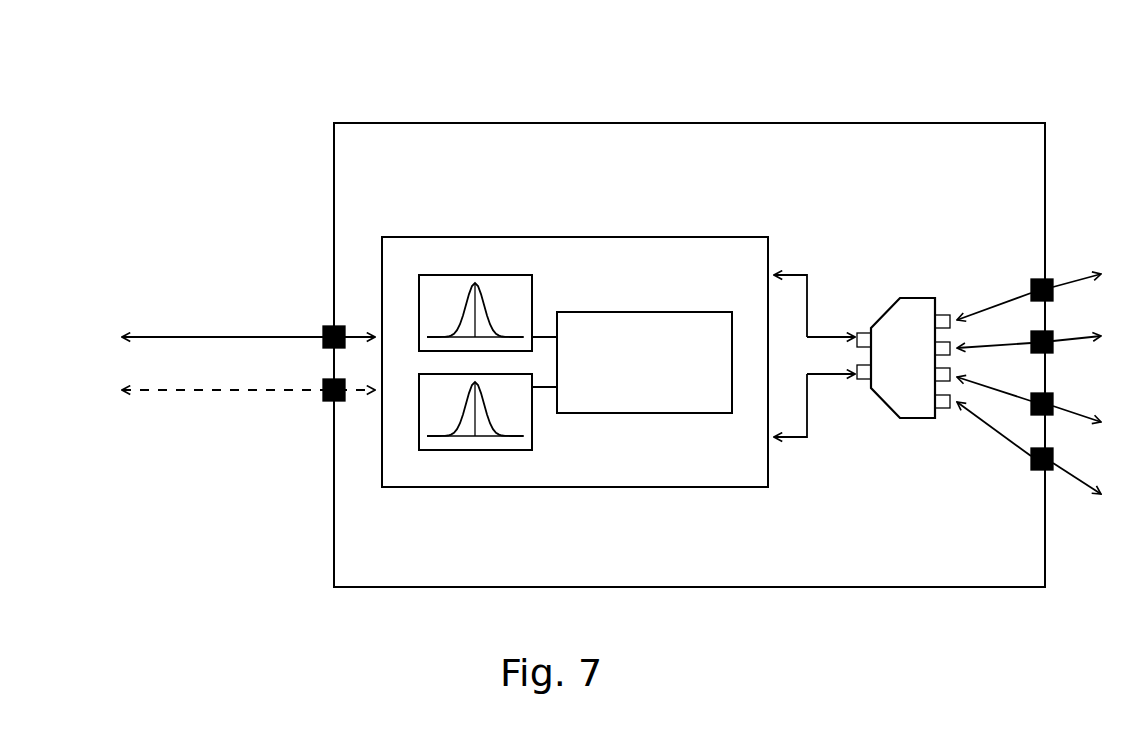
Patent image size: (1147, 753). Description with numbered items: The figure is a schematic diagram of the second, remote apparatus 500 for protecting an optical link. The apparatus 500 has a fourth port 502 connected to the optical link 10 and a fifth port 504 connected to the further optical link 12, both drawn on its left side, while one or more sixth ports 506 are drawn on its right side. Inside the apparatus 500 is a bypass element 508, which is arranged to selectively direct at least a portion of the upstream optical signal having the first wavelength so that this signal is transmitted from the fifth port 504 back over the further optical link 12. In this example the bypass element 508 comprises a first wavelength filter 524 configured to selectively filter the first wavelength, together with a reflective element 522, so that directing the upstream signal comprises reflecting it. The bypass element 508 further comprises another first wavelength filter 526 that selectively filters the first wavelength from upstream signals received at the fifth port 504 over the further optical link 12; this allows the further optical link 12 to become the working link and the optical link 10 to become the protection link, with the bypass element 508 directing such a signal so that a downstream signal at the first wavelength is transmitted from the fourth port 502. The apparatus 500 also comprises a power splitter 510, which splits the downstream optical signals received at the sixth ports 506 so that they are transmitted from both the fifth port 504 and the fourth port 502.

The second apparatus 500 is at (683, 113).
The optical link 10 is at (145, 334).
The further optical link 12 is at (160, 392).
The fourth port 502 is at (330, 325).
The fifth port 504 is at (325, 398).
The sixth ports 506 is at (1045, 282).
The bypass element 508 is at (407, 236).
The power splitter 510 is at (922, 297).
The reflective element 522 is at (657, 311).
The first wavelength filter 524 is at (495, 275).
The another first wavelength filter 526 is at (495, 452).